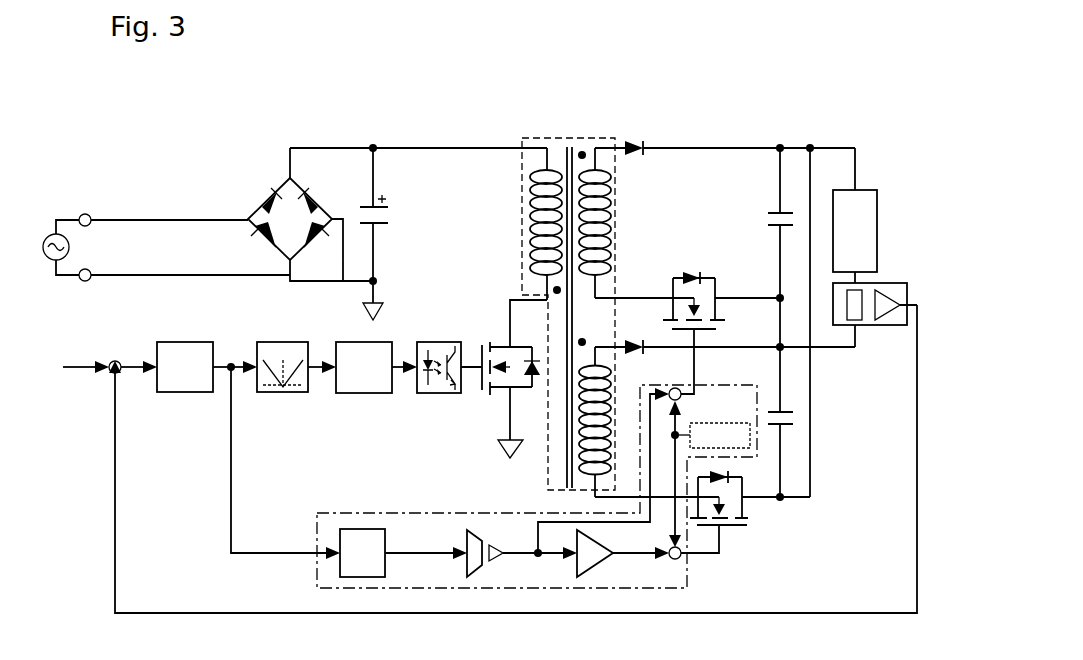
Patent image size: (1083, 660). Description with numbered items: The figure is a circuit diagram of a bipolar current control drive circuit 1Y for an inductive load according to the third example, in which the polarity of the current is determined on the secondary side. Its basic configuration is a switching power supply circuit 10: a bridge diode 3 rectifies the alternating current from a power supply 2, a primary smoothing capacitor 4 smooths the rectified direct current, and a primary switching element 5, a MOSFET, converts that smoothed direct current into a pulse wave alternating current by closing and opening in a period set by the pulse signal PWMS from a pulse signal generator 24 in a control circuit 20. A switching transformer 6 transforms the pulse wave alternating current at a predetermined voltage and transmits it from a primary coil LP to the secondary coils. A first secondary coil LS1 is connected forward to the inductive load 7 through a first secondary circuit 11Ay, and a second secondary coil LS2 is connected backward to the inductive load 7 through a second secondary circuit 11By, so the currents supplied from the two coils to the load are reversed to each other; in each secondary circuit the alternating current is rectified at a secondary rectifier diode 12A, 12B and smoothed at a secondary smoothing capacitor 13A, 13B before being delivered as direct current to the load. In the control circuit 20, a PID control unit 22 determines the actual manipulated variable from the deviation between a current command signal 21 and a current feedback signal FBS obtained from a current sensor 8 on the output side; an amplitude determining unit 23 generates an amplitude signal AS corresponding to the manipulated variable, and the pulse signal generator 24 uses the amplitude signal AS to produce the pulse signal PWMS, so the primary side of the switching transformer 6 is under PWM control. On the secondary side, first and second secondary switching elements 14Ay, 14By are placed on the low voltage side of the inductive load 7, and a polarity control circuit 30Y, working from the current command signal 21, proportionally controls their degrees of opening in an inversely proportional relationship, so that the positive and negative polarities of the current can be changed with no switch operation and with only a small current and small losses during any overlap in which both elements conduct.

The bipolar current control drive circuit 1Y is at (756, 317).
The power supply 2 is at (55, 233).
The bridge diode 3 is at (272, 182).
The primary smoothing capacitor 4 is at (384, 207).
The primary switching element 5 is at (500, 347).
The switching transformer 6 is at (576, 279).
The inductive load 7 is at (878, 210).
The current sensor 8 is at (882, 283).
The switching power supply circuit 10 is at (376, 202).
The first secondary circuit 11Ay is at (725, 234).
The second secondary circuit 11By is at (741, 422).
The secondary rectifier diode 12A is at (634, 143).
The secondary rectifier diode 12B is at (638, 341).
The secondary smoothing capacitor 13A is at (787, 210).
The secondary smoothing capacitor 13B is at (793, 414).
The first secondary switching element 14Ay is at (695, 276).
The second secondary switching element 14By is at (777, 506).
The control circuit 20 is at (396, 441).
The current command signal 21 is at (63, 370).
The PID control unit 22 is at (168, 343).
The amplitude determining unit 23 is at (281, 343).
The pulse signal generator 24 is at (356, 344).
The polarity control circuit 30Y is at (405, 512).
The primary coil LP is at (533, 220).
The first secondary coil LS1 is at (612, 218).
The second secondary coil LS2 is at (613, 420).
The amplitude signal AS is at (318, 371).
The pulse signal PWMS is at (400, 371).
The current feedback signal FBS is at (150, 612).